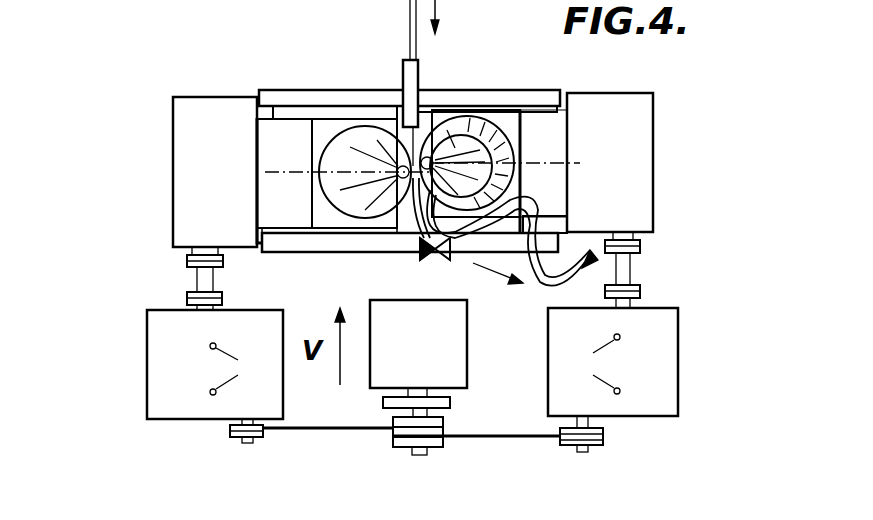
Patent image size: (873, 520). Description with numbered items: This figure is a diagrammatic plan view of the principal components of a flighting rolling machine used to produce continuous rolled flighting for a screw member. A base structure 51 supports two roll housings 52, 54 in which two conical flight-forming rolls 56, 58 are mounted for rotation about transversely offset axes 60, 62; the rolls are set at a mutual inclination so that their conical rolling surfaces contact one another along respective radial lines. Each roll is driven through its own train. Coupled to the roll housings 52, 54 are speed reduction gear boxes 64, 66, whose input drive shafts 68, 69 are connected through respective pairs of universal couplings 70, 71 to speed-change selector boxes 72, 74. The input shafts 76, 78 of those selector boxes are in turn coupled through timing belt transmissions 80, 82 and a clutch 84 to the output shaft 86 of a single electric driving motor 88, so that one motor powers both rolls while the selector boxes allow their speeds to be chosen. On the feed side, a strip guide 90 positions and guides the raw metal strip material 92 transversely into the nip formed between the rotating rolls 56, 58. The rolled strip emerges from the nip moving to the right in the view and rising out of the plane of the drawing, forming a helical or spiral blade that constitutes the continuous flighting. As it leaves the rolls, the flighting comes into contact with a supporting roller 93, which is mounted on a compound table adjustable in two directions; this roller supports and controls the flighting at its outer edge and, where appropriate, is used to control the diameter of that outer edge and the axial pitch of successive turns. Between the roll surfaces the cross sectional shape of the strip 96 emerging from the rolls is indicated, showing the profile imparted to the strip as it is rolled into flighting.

The base structure 51 is at (335, 100).
The roll housing 52 is at (257, 152).
The roll housing 54 is at (567, 124).
The conical flight-forming roll 56 is at (318, 202).
The conical flight-forming roll 58 is at (518, 178).
The axis 60 is at (263, 165).
The axis 62 is at (537, 163).
The speed reduction gear box 64 is at (215, 108).
The speed reduction gear box 66 is at (637, 156).
The input drive shaft 68 is at (187, 262).
The input drive shaft 69 is at (642, 244).
The universal couplings 70 is at (222, 298).
The universal couplings 71 is at (642, 292).
The speed-change selector box 72 is at (147, 380).
The speed-change selector box 74 is at (678, 368).
The input shaft 76 is at (247, 445).
The input shaft 78 is at (583, 453).
The timing belt transmission 80 is at (345, 435).
The timing belt transmission 82 is at (505, 441).
The clutch 84 is at (445, 418).
The output shaft 86 is at (450, 400).
The electric driving motor 88 is at (453, 342).
The strip guide 90 is at (420, 75).
The raw metal strip material 92 is at (407, 33).
The supporting roller 93 is at (427, 257).
The cross sectional shape of the strip 96 is at (540, 208).